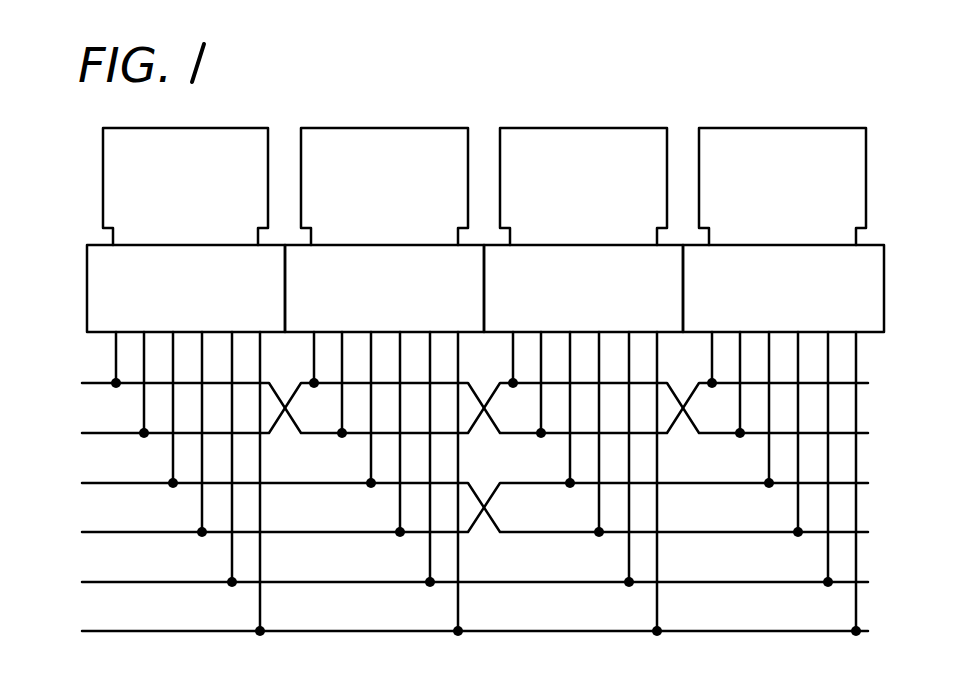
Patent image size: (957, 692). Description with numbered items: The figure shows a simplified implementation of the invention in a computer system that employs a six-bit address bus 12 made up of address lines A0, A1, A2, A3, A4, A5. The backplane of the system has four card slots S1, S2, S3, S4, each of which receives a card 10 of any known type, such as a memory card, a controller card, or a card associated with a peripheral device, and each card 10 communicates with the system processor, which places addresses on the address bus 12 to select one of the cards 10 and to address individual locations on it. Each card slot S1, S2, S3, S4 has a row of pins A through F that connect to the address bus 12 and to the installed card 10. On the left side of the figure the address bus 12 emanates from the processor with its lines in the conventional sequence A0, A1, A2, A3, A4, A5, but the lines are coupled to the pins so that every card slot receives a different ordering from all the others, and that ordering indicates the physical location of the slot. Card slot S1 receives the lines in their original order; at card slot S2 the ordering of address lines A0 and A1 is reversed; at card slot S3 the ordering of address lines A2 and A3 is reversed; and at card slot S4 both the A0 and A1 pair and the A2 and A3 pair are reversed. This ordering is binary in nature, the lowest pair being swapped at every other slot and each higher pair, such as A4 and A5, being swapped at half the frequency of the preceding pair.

The card 10 is at (177, 167).
The address bus 12 is at (465, 498).
The card slot S1 is at (186, 440).
The card slot S2 is at (384, 440).
The card slot S3 is at (583, 440).
The card slot S4 is at (783, 440).
The address line A0 is at (453, 402).
The address line A1 is at (453, 414).
The address line A2 is at (453, 501).
The address line A3 is at (453, 514).
The address line A4 is at (453, 582).
The address line A5 is at (453, 631).